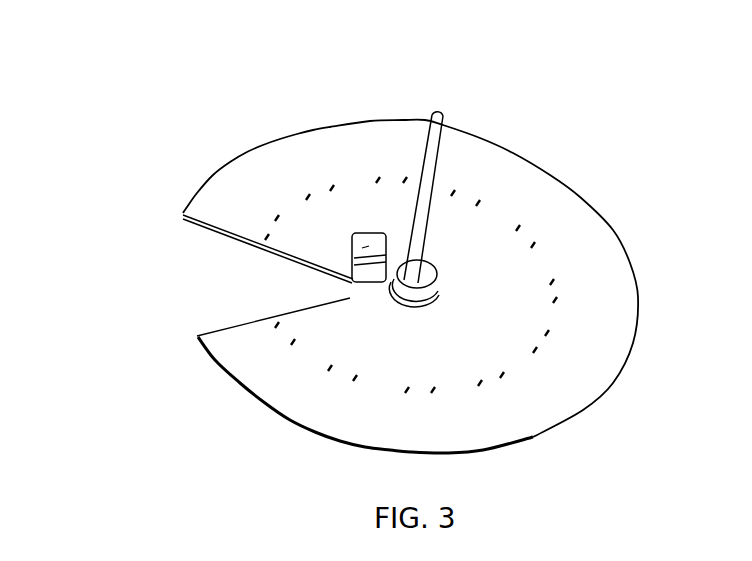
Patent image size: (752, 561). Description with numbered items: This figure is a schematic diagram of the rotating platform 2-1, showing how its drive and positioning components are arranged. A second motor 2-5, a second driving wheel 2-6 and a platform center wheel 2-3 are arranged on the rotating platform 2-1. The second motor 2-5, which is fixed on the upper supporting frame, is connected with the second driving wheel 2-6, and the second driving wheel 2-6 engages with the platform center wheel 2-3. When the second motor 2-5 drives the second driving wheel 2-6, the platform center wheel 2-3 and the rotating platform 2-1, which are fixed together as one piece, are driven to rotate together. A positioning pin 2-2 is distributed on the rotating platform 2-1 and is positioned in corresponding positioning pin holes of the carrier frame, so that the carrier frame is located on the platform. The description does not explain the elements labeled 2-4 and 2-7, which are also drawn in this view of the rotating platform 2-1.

The rotating platform 2-1 is at (550, 75).
The positioning pin 2-2 is at (622, 130).
The platform center wheel 2-3 is at (657, 195).
The disc face 2-4 is at (670, 258).
The second motor 2-5 is at (352, 264).
The second driving wheel 2-6 is at (378, 275).
The notched rotating disc 2-7 is at (225, 265).